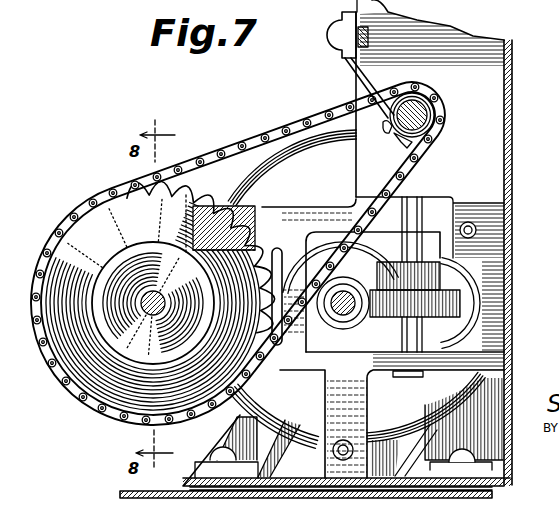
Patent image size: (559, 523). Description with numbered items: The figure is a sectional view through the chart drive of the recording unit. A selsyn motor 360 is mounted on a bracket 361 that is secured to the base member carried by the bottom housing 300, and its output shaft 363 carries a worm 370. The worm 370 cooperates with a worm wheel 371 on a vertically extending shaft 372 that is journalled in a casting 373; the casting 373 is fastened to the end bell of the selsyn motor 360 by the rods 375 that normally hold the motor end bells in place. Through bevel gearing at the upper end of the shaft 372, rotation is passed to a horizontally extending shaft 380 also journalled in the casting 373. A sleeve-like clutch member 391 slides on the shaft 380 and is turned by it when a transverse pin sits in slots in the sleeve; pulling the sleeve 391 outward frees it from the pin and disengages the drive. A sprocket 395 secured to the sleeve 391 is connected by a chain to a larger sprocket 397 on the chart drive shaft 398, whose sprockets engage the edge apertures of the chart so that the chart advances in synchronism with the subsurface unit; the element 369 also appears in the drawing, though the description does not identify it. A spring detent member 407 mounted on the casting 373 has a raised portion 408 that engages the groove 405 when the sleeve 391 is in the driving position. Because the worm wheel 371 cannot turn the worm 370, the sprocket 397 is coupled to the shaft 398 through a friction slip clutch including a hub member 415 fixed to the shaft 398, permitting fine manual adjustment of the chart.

The bottom housing 300 is at (495, 496).
The selsyn motor 360 is at (296, 121).
The bracket 361 is at (508, 280).
The output shaft 363 is at (344, 316).
The chain rollers 369 is at (233, 144).
The worm 370 is at (345, 283).
The worm wheel 371 is at (428, 317).
The vertically extending shaft 372 is at (422, 220).
The casting 373 is at (494, 330).
The rods 375 is at (476, 228).
The horizontally extending shaft 380 is at (414, 97).
The sleeve-like member 391 is at (440, 103).
The sprocket 395 is at (383, 126).
The larger sprocket 397 is at (195, 200).
The chart drive shaft 398 is at (157, 292).
The groove 405 is at (436, 122).
The spring detent member 407 is at (347, 66).
The raised portion 408 is at (398, 138).
The hub member 415 is at (166, 247).